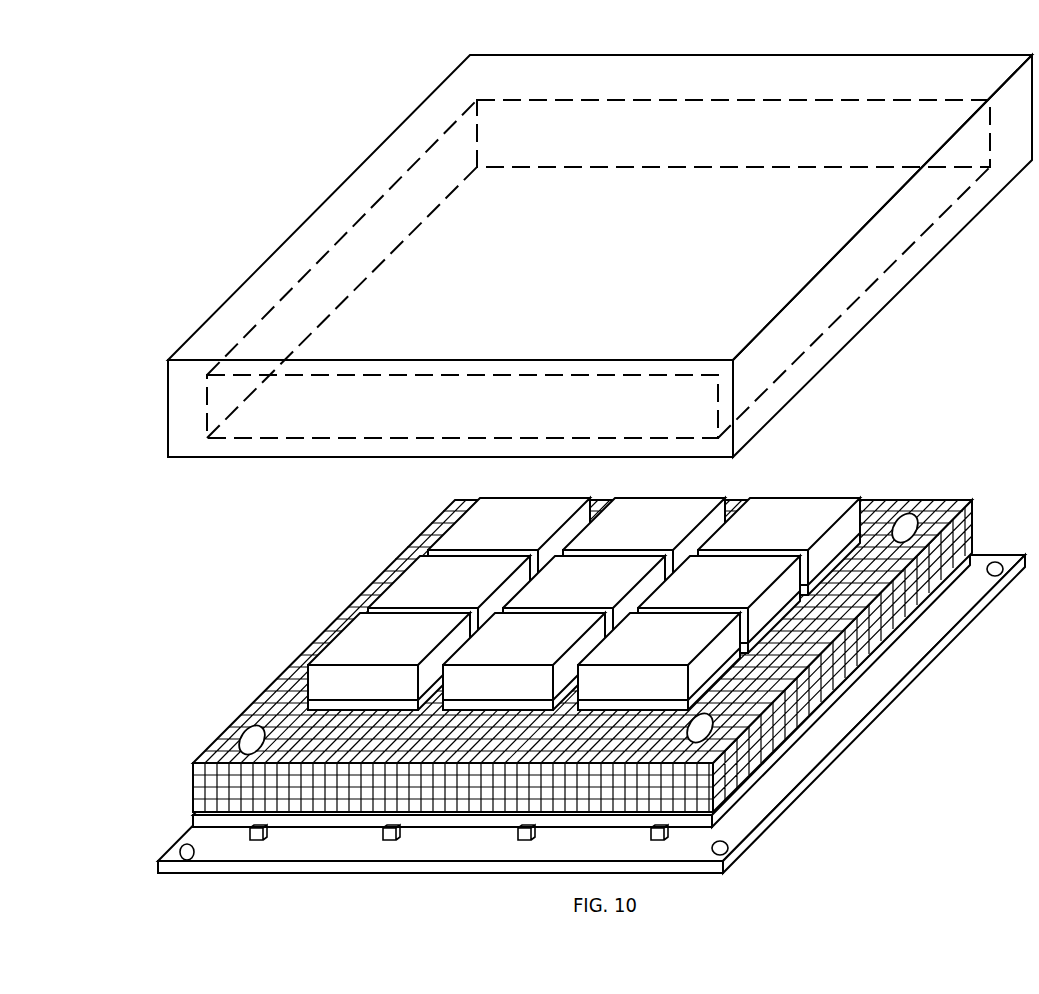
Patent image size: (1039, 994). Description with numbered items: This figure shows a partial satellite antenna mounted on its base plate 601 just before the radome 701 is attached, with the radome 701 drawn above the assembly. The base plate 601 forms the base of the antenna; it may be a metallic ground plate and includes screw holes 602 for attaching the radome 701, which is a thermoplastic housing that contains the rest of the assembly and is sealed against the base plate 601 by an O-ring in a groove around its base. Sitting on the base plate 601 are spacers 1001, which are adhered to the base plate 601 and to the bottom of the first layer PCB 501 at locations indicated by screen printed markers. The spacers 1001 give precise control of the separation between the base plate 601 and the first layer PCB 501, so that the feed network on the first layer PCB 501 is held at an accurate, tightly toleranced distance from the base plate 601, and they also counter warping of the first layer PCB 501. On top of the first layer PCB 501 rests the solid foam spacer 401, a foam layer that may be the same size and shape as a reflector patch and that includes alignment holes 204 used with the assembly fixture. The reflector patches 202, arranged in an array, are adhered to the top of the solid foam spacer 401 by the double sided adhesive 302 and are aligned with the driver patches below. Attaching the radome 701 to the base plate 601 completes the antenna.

The reflector patches 202 is at (758, 497).
The alignment holes 204 is at (920, 525).
The double sided adhesive layer 302 is at (778, 622).
The solid foam spacer 401 is at (193, 768).
The first layer PCB 501 is at (192, 818).
The base plate 601 is at (765, 832).
The screw holes 602 is at (725, 852).
The radome 701 is at (870, 322).
The spacers 1001 is at (397, 838).